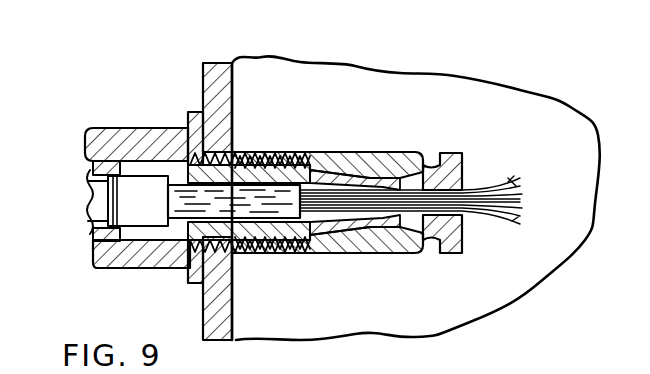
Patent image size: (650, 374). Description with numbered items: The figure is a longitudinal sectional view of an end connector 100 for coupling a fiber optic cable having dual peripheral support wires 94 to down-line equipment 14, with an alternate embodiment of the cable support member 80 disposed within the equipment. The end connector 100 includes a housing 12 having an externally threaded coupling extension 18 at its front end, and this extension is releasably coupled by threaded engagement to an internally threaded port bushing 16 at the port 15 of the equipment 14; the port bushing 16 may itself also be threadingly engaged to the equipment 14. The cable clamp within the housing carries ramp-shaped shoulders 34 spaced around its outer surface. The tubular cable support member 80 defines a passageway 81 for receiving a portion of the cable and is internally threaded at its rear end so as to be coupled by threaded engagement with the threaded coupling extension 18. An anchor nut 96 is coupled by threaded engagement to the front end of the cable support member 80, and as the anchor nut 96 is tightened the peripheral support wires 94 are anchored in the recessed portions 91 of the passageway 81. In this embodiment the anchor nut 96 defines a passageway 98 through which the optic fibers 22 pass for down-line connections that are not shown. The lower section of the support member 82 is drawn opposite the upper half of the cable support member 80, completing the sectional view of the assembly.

The end connector 100 is at (175, 62).
The housing 12 is at (122, 128).
The equipment 14 is at (233, 83).
The port 15 is at (246, 140).
The port bushing 16 is at (190, 114).
The threaded coupling extension 18 is at (281, 152).
The optic fibers 22 is at (508, 193).
The ramp-shaped shoulders 34 is at (93, 232).
The cable support member 80 is at (327, 188).
The passageway 81 is at (392, 166).
The lower ferrule half 82 is at (374, 253).
The recessed portions 91 is at (406, 152).
The peripheral support wires 94 is at (268, 172).
The anchor nut 96 is at (451, 152).
The passageway 98 is at (466, 188).